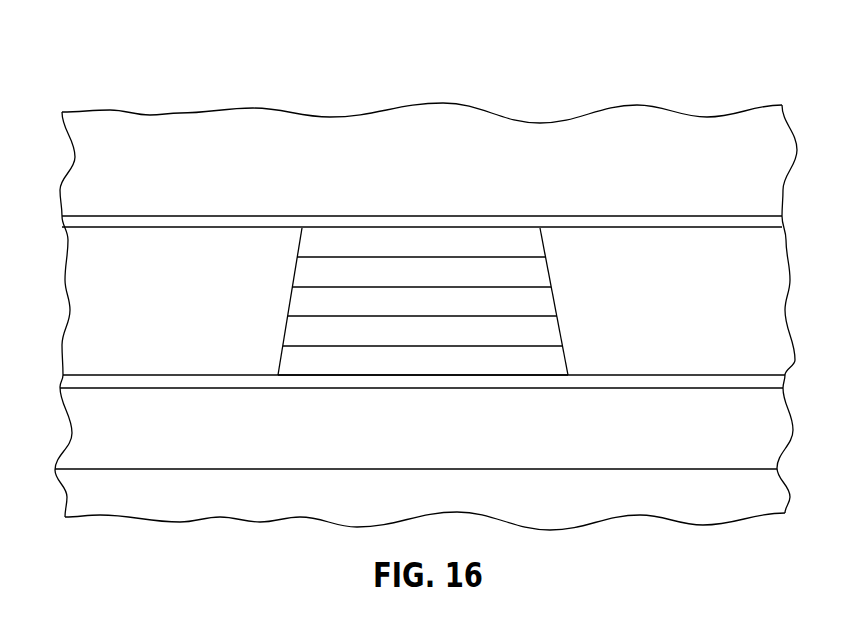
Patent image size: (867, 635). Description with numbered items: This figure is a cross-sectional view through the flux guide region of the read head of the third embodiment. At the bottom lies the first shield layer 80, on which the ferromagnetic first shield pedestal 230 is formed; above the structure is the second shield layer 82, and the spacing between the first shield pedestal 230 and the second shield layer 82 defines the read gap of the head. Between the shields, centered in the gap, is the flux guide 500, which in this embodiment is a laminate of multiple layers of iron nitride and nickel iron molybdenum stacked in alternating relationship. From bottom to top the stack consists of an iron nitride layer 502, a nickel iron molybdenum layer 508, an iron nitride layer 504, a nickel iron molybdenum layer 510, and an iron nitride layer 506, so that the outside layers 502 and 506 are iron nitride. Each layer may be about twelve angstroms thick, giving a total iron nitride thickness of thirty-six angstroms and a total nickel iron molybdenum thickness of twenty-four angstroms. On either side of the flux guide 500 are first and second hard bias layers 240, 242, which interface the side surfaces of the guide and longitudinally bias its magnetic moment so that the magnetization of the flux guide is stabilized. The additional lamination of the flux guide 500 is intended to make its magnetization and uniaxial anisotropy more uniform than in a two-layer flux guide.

The second shield layer 82 is at (183, 123).
The flux guide 500 is at (460, 218).
The first hard bias layer 240 is at (129, 247).
The second hard bias layer 242 is at (720, 252).
The iron nitride layer 506 is at (538, 240).
The nickel iron molybdenum layer 510 is at (545, 270).
The iron nitride layer 504 is at (552, 300).
The nickel iron molybdenum layer 508 is at (560, 330).
The iron nitride layer 502 is at (566, 360).
The first shield pedestal 230 is at (175, 453).
The first shield layer 80 is at (722, 513).